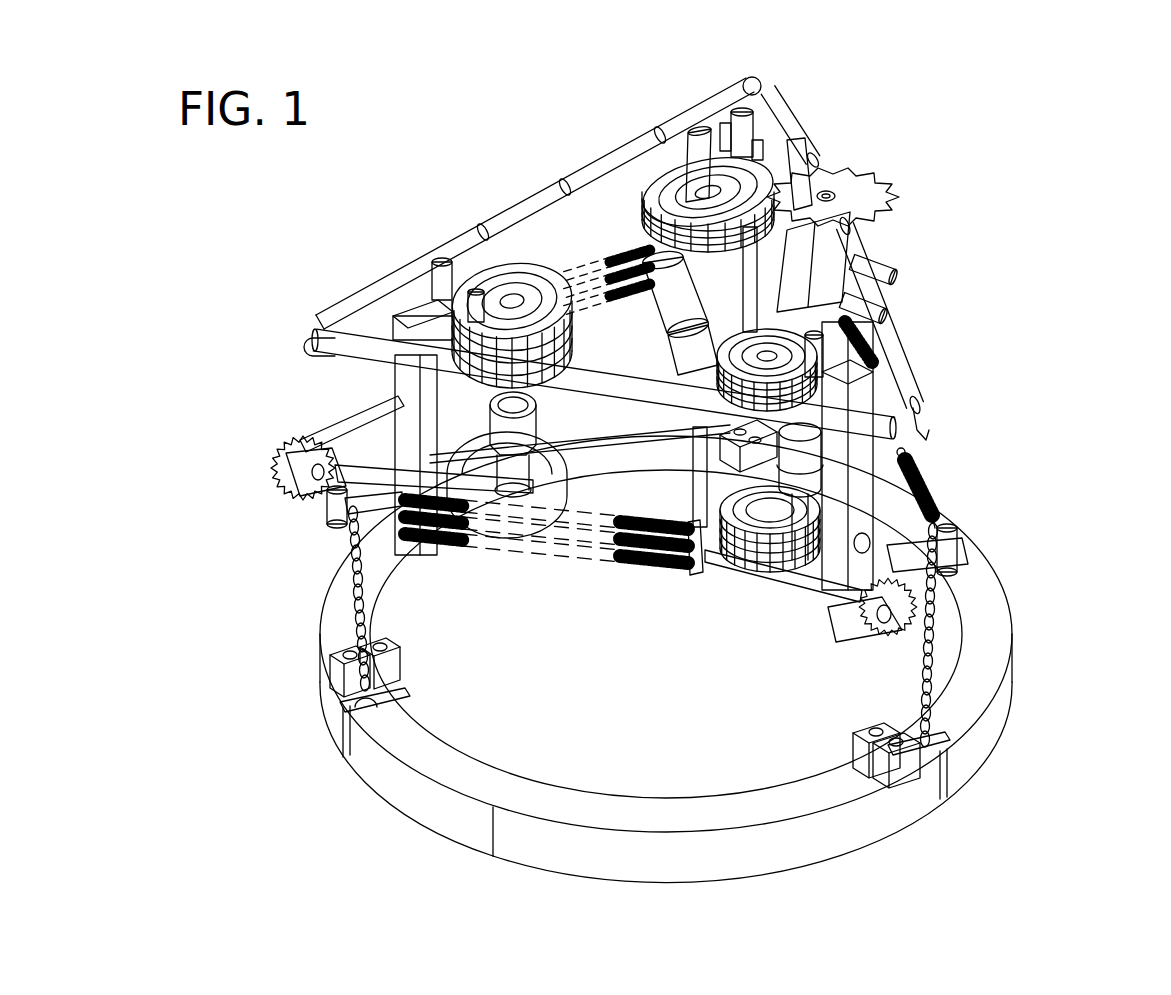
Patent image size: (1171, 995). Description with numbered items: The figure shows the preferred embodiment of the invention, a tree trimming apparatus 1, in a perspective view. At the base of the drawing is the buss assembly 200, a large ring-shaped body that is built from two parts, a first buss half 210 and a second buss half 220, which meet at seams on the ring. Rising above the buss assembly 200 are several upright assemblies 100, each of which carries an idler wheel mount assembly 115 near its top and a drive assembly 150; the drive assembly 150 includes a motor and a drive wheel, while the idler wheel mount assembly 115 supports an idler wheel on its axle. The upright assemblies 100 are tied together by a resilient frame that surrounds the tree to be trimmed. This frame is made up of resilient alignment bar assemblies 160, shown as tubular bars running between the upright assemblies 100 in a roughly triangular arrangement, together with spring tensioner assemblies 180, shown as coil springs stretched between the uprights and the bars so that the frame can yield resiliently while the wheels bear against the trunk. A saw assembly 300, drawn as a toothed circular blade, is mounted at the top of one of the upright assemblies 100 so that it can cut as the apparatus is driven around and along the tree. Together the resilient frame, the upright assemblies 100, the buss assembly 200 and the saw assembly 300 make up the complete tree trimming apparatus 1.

The tree trimming apparatus 1 is at (397, 388).
The upright assembly 100 is at (745, 125).
The idler wheel mount assembly 115 is at (658, 183).
The drive assembly 150 is at (668, 298).
The resilient alignment bar assemblies 160 is at (518, 213).
The spring tensioner assemblies 180 is at (582, 280).
The buss assembly 200 is at (990, 618).
The first buss half 210 is at (712, 812).
The second buss half 220 is at (455, 770).
The saw assembly 300 is at (867, 200).